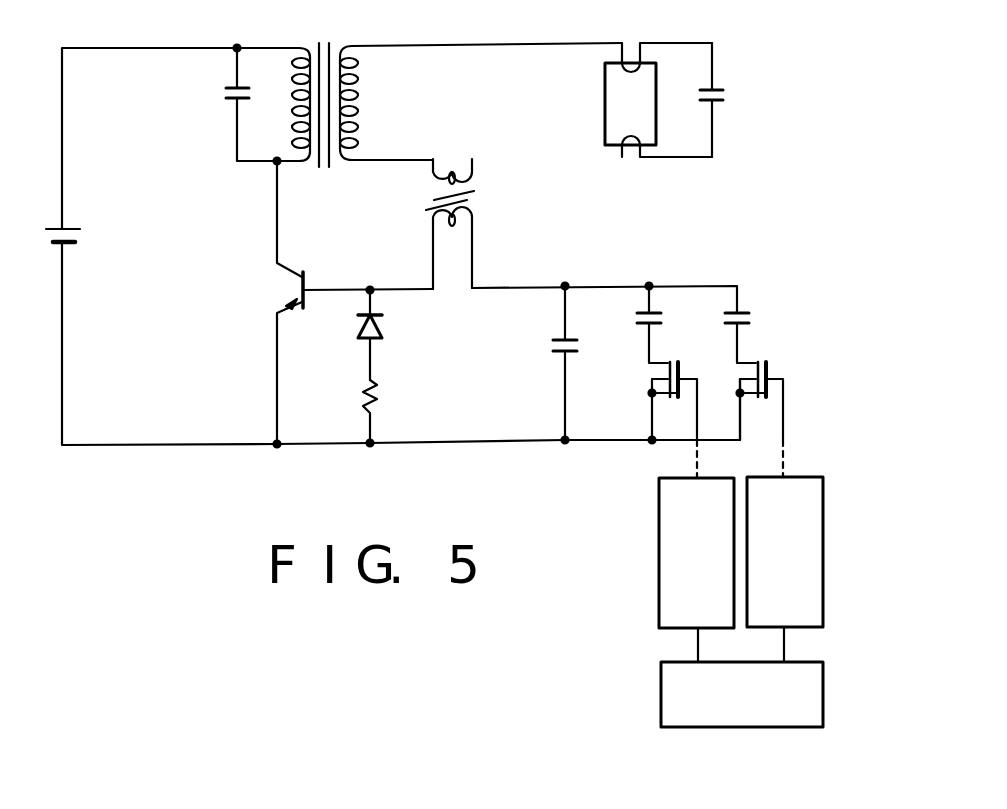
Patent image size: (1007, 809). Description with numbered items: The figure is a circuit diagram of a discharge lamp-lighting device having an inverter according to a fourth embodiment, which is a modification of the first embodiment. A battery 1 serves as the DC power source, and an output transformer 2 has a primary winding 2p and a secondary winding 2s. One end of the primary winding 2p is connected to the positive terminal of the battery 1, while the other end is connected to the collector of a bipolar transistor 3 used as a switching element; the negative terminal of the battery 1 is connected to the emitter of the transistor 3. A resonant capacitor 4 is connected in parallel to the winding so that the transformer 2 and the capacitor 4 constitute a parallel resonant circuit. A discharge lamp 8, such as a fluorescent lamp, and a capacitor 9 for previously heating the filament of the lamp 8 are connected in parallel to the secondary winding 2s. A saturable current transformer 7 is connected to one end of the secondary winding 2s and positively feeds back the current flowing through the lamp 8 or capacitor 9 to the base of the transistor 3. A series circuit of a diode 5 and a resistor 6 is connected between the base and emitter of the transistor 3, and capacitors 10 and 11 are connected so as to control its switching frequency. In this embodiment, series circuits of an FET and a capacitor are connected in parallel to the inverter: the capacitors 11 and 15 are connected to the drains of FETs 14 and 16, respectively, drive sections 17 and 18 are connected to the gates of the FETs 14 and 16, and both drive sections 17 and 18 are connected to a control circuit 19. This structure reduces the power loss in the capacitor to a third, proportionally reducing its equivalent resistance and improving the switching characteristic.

The battery 1 is at (48, 245).
The output transformer 2 is at (429, 83).
The primary winding 2p is at (296, 92).
The secondary winding 2s is at (357, 95).
The bipolar transistor 3 is at (279, 289).
The resonant capacitor 4 is at (224, 95).
The diode 5 is at (384, 330).
The resistor 6 is at (378, 392).
The saturable current transformer 7 is at (474, 196).
The discharge lamp 8 is at (629, 44).
The capacitor 9 is at (725, 95).
The capacitor 10 is at (553, 346).
The capacitor 11 is at (676, 299).
The FET 14 is at (684, 372).
The capacitor 15 is at (764, 299).
The FET 16 is at (771, 372).
The drive section 17 is at (658, 541).
The drive section 18 is at (824, 533).
The control circuit 19 is at (824, 688).